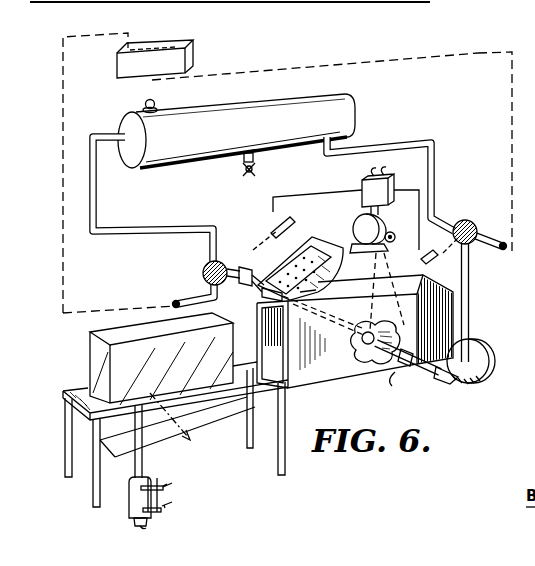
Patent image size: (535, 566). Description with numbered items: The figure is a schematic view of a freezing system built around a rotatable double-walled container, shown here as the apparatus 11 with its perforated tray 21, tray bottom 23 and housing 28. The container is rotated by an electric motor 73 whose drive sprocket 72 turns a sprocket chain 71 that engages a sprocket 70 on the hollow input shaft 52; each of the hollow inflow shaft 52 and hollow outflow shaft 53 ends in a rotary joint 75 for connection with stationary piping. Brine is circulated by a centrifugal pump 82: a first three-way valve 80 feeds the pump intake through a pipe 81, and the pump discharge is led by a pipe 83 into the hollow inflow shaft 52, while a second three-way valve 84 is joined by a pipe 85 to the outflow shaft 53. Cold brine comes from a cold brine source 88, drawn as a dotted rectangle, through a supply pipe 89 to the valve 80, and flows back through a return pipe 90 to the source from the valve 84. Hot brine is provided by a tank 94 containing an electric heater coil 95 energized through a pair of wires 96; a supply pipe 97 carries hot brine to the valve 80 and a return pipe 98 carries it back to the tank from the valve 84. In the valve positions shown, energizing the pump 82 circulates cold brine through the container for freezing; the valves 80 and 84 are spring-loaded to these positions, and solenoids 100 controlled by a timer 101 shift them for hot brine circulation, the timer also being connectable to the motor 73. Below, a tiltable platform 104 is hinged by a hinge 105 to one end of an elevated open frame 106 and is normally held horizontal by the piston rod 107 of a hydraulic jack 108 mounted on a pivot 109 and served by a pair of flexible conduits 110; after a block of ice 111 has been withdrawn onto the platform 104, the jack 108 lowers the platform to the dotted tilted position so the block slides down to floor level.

The apparatus 11 is at (366, 264).
The perforated hopper tray 21 is at (314, 246).
The tray bottom 23 is at (318, 292).
The housing 28 is at (355, 331).
The input shaft 52 is at (389, 388).
The hollow outflow shaft 53 is at (263, 300).
The sprocket 70 is at (372, 350).
The sprocket chain 71 is at (378, 326).
The drive sprocket 72 is at (397, 238).
The electric motor 73 is at (382, 221).
The rotary joint 75 is at (251, 288).
The 3-way valve 80 is at (482, 215).
The pipe 81 is at (470, 324).
The centrifugal pump 82 is at (495, 372).
The pipe 83 is at (442, 378).
The second 3-way valve 84 is at (203, 272).
The pipe 85 is at (243, 265).
The cold brine source 88 is at (188, 60).
The supply pipe 89 is at (478, 52).
The return pipe 90 is at (64, 283).
The tank 94 is at (128, 123).
The electric heater coil 95 is at (238, 150).
The wires 96 is at (250, 176).
The supply pipe 97 is at (431, 142).
The return pipe 98 is at (97, 202).
The solenoids 100 is at (278, 231).
The timer 101 is at (362, 190).
The tiltable platform 104 is at (75, 390).
The hinge 105 is at (262, 388).
The elevated open frame 106 is at (66, 418).
The piston rod 107 is at (145, 456).
The hydraulic jack 108 is at (130, 505).
The pivot 109 is at (148, 526).
The flexible conduits 110 is at (160, 490).
The block of ice 111 is at (161, 359).